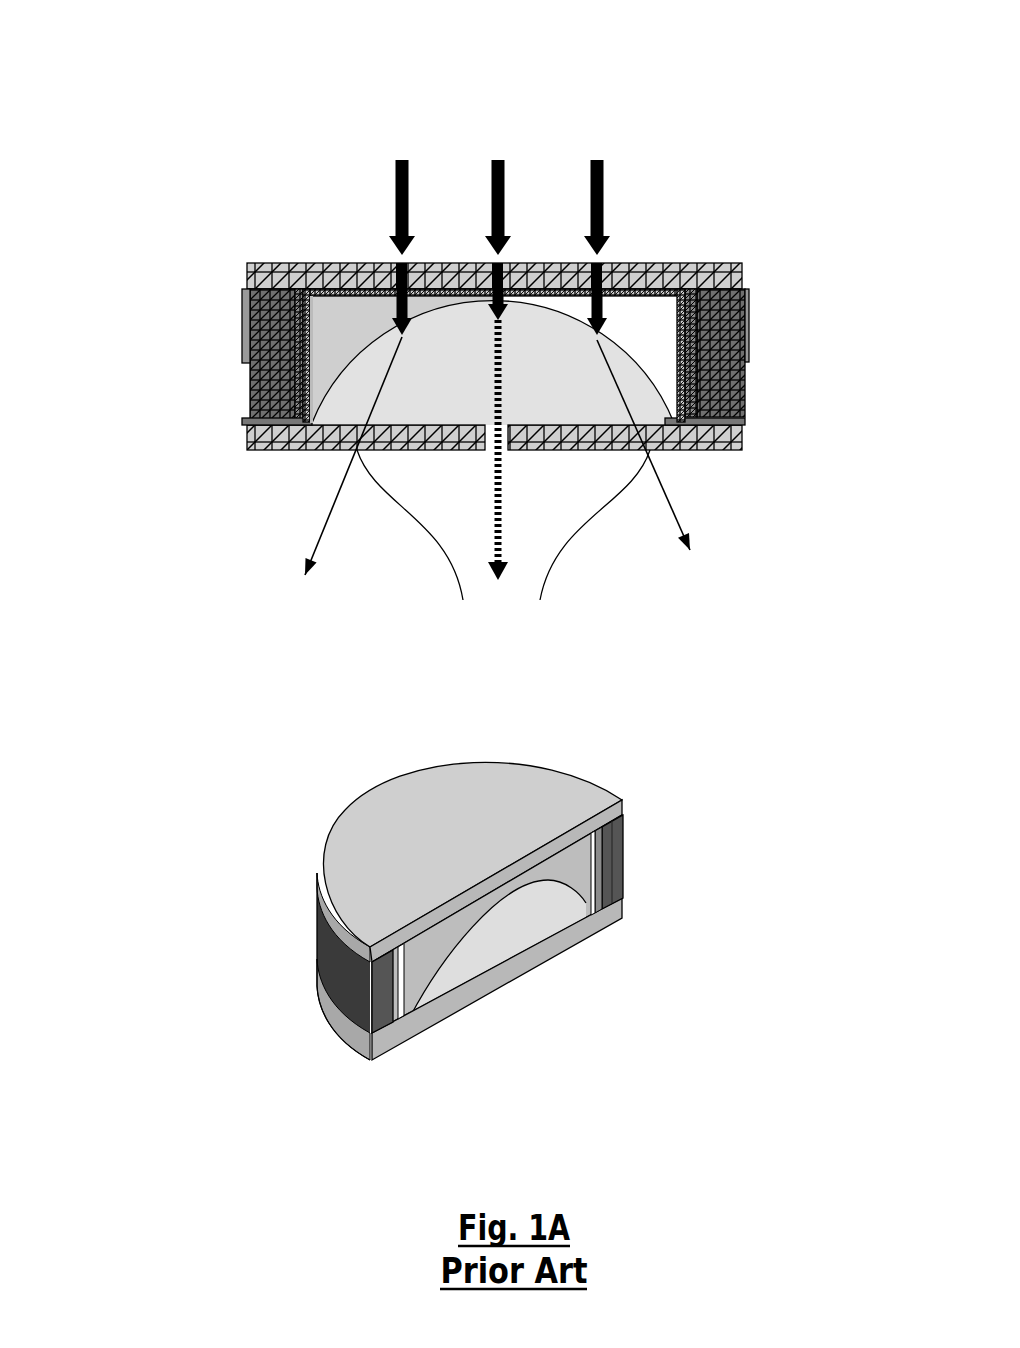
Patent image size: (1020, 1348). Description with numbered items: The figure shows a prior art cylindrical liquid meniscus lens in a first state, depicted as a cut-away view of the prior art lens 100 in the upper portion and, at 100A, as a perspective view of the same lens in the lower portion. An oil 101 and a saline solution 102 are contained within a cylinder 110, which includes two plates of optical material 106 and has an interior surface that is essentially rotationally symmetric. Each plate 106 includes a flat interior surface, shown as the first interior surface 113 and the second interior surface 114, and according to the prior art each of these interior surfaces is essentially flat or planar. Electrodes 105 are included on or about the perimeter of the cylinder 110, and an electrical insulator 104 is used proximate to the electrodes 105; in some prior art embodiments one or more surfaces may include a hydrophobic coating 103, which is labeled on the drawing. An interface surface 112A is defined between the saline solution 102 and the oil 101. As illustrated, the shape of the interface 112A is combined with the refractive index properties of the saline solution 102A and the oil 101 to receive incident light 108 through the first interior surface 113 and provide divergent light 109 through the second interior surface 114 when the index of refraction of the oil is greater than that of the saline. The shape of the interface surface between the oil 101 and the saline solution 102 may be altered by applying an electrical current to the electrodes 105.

The prior art lens 100 is at (461, 586).
The perspective view of prior art lens 100A is at (458, 951).
The oil 101 is at (580, 860).
The saline solution 102 is at (645, 402).
The saline solution 102A is at (481, 969).
The hydrophobic coating 103 is at (292, 100).
The electrical insulator 104 is at (395, 1154).
The electrodes 105 is at (233, 363).
The plate of optical material 106 is at (377, 285).
The incident light 108 is at (499, 207).
The divergent light 109 is at (497, 491).
The cylinder 110 is at (712, 369).
The interface surface 112A is at (538, 305).
The first interior surface 113 is at (345, 327).
The second interior surface 114 is at (345, 423).